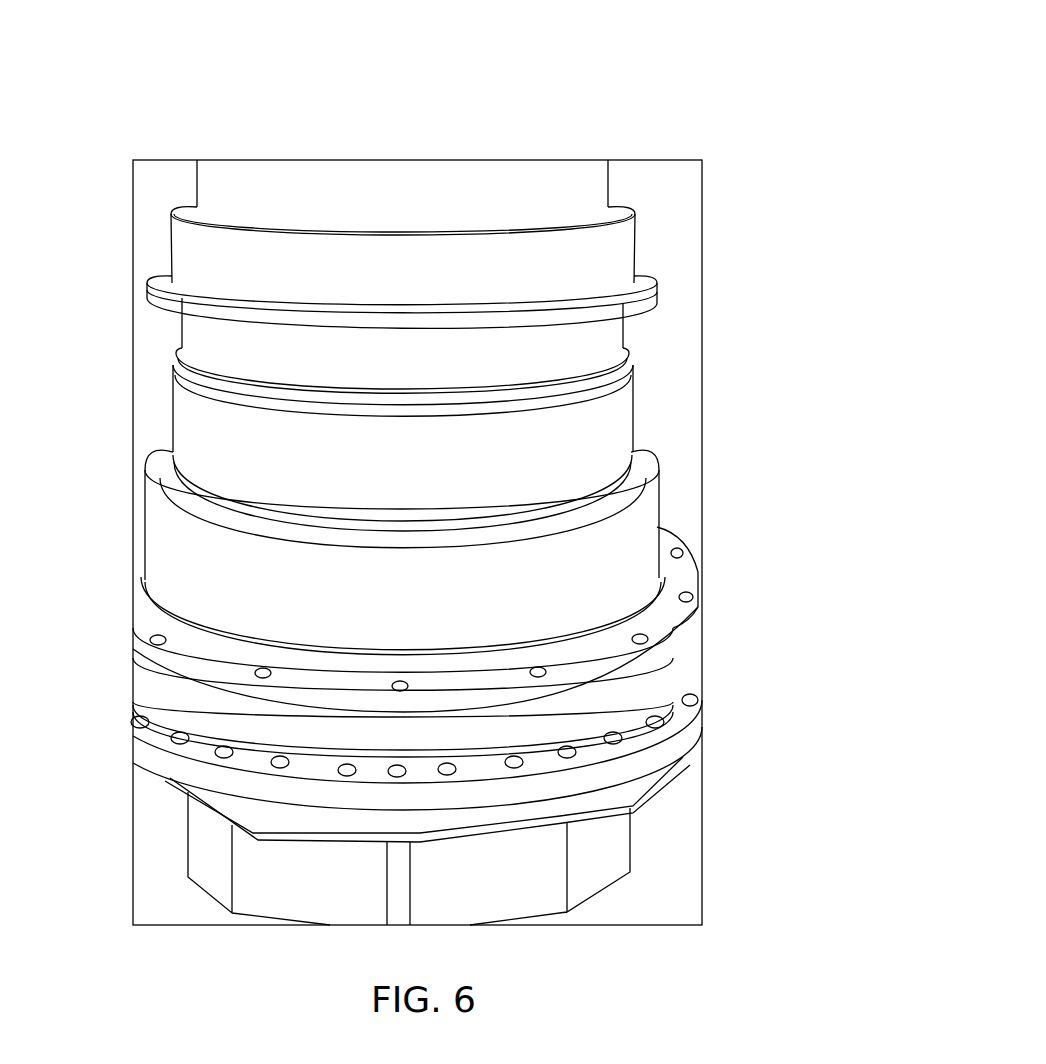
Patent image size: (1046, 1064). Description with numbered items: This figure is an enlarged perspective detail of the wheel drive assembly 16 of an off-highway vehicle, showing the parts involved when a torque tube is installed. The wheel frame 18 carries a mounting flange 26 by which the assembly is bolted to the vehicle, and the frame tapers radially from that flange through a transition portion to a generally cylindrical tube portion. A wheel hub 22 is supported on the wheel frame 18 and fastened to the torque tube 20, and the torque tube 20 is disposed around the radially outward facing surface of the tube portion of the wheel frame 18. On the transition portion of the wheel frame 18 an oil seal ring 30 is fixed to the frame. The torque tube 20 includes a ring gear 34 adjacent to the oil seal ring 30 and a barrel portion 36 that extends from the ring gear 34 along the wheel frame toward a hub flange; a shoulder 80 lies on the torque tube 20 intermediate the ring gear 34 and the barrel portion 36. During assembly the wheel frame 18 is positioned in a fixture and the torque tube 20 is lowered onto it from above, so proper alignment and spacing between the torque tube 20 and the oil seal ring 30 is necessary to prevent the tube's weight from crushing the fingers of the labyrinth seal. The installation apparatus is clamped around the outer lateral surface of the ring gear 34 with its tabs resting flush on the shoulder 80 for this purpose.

The wheel drive assembly 16 is at (617, 58).
The wheel frame 18 is at (660, 675).
The torque tube 20 is at (145, 465).
The wheel hub 22 is at (575, 187).
The mounting flange 26 is at (202, 750).
The oil seal ring 30 is at (660, 620).
The ring gear 34 is at (175, 563).
The barrel portion 36 is at (193, 420).
The shoulder 80 is at (622, 495).